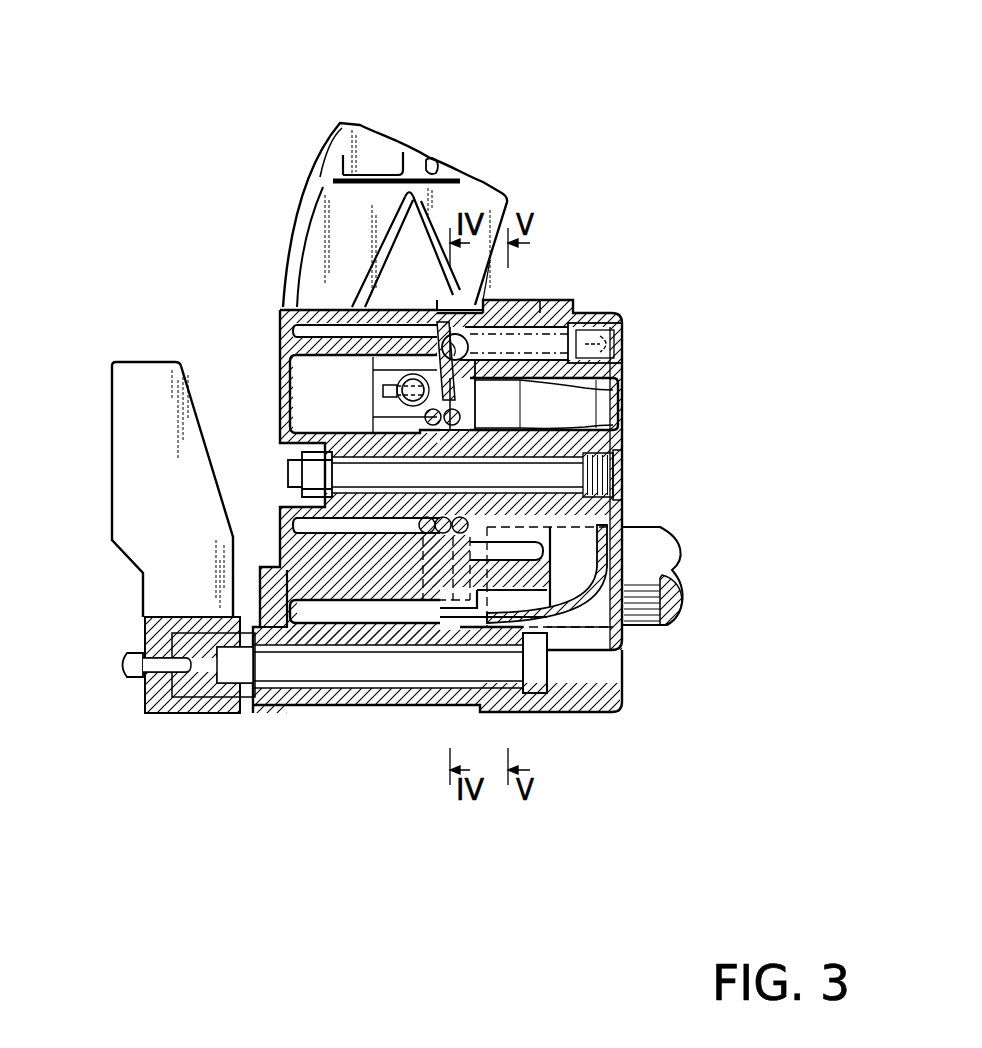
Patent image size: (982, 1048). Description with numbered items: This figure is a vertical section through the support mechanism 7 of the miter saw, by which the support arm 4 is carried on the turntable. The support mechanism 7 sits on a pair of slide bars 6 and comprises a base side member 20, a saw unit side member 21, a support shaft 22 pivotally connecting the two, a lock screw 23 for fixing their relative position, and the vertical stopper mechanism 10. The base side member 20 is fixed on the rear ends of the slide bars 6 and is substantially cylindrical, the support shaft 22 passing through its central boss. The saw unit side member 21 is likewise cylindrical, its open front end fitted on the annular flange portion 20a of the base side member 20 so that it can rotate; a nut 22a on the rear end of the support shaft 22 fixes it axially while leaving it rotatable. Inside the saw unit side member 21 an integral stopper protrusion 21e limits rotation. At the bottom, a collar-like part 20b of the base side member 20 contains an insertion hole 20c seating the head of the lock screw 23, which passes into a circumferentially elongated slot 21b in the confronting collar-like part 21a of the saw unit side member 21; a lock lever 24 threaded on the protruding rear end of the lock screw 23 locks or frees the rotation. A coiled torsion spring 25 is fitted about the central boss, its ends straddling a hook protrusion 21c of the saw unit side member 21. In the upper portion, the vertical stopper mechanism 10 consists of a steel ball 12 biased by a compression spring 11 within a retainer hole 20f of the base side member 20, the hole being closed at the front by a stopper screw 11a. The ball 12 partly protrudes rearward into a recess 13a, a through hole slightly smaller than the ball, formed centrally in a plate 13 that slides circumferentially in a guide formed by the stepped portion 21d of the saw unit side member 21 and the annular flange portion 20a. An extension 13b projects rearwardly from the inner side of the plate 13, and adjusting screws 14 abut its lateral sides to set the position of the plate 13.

The support arm 4 is at (347, 305).
The slide bars 6 is at (665, 562).
The support mechanism 7 is at (580, 300).
The vertical stopper mechanism 10 is at (597, 258).
The compression spring 11 is at (623, 388).
The stopper screw 11a is at (627, 332).
The ball 12 is at (600, 302).
The plate 13 is at (393, 383).
The recess 13a is at (456, 307).
The extension 13b is at (318, 225).
The adjusting screws 14 is at (395, 402).
The base side member 20 is at (613, 303).
The annular flange portion 20a is at (522, 300).
The collar-like part 20b is at (518, 712).
The insertion hole 20c is at (515, 680).
The retainer hole 20f is at (600, 400).
The saw unit side member 21 is at (287, 317).
The collar-like part 21a is at (278, 702).
The slot 21b is at (397, 660).
The hook protrusion 21c is at (350, 575).
The stepped portion 21d is at (463, 300).
The stopper protrusion 21e is at (600, 572).
The support shaft 22 is at (528, 467).
The nut 22a is at (282, 397).
The lock screw 23 is at (317, 660).
The lock lever 24 is at (150, 553).
The coiled torsion spring 25 is at (600, 518).